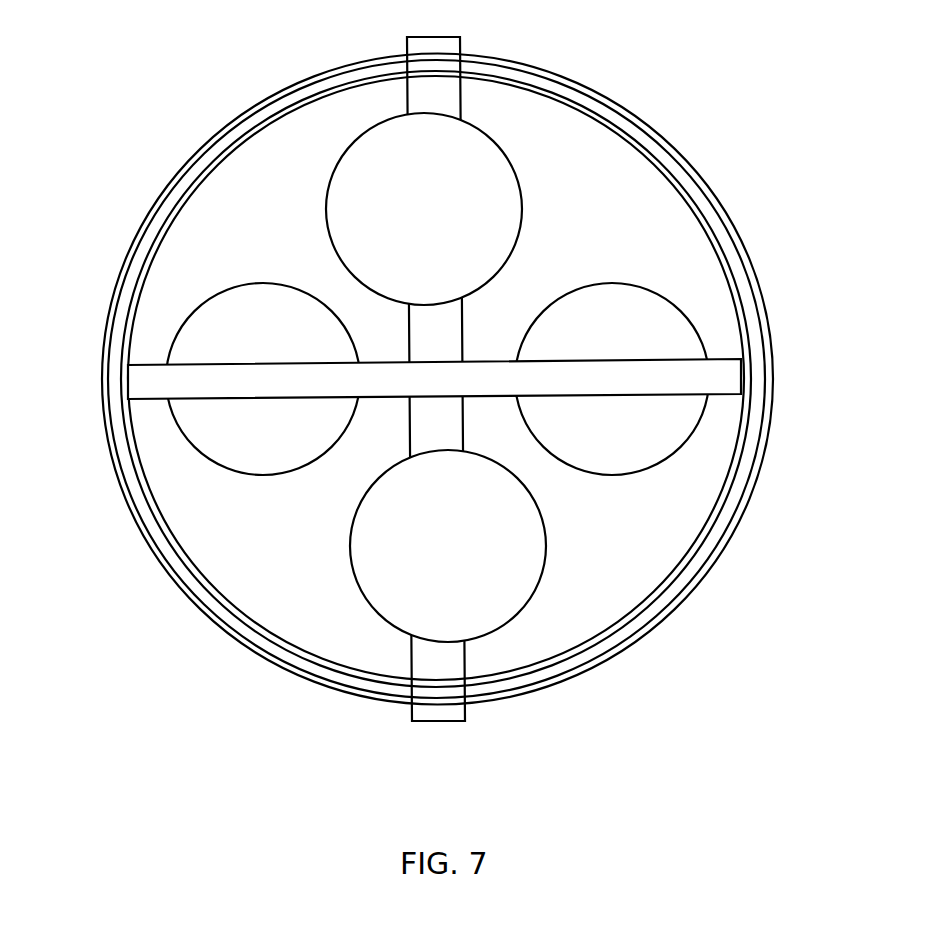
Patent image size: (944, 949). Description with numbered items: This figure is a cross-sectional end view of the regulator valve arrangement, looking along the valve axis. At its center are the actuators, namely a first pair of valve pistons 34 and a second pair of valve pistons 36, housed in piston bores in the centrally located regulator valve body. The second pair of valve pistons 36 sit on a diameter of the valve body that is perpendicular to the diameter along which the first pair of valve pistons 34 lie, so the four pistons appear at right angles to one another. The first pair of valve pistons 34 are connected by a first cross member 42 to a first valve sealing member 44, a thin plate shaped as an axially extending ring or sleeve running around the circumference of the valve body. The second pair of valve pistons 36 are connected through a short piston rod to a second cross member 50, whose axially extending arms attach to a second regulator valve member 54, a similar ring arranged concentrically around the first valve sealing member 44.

The first pair of valve pistons 34 is at (297, 436).
The second pair of valve pistons 36 is at (476, 177).
The first cross member 42 is at (228, 383).
The first valve sealing member 44 is at (647, 153).
The second cross member 50 is at (418, 327).
The second regulator valve member 54 is at (190, 158).